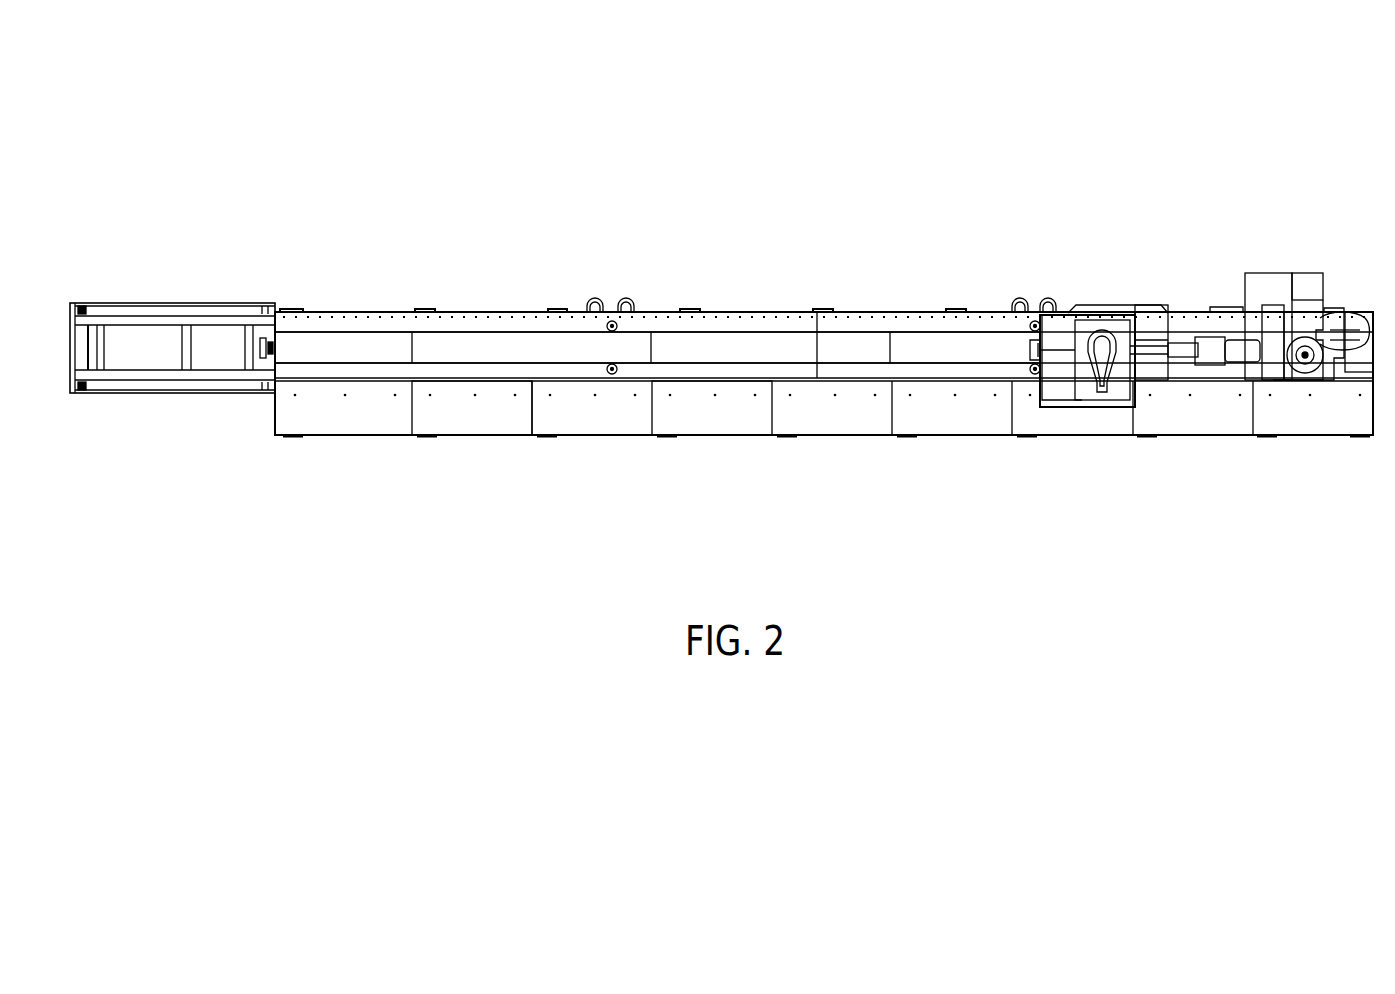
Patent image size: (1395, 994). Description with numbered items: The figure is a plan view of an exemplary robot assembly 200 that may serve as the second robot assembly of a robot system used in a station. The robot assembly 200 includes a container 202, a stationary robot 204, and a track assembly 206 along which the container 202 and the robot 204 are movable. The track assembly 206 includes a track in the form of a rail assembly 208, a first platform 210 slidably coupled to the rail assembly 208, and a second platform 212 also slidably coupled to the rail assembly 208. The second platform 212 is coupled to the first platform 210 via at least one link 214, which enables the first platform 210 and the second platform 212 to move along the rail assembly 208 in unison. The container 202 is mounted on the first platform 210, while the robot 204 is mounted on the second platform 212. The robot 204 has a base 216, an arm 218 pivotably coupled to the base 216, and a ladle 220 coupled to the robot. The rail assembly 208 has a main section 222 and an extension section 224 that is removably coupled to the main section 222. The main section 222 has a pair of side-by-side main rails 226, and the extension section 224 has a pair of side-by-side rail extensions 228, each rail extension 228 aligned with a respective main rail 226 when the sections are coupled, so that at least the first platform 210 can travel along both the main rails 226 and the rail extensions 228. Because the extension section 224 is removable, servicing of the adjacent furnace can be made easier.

The robot assembly 200 is at (380, 120).
The container 202 is at (1098, 410).
The stationary robot 204 is at (1240, 310).
The track assembly 206 is at (582, 305).
The rail assembly 208 is at (493, 385).
The first platform 210 is at (1150, 305).
The second platform 212 is at (1312, 275).
The link 214 is at (1190, 320).
The base 216 is at (1308, 382).
The arm 218 is at (1213, 366).
The ladle 220 is at (1090, 330).
The main section 222 is at (740, 385).
The extension section 224 is at (157, 397).
The main rails 226 is at (781, 380).
The rail extensions 228 is at (125, 380).